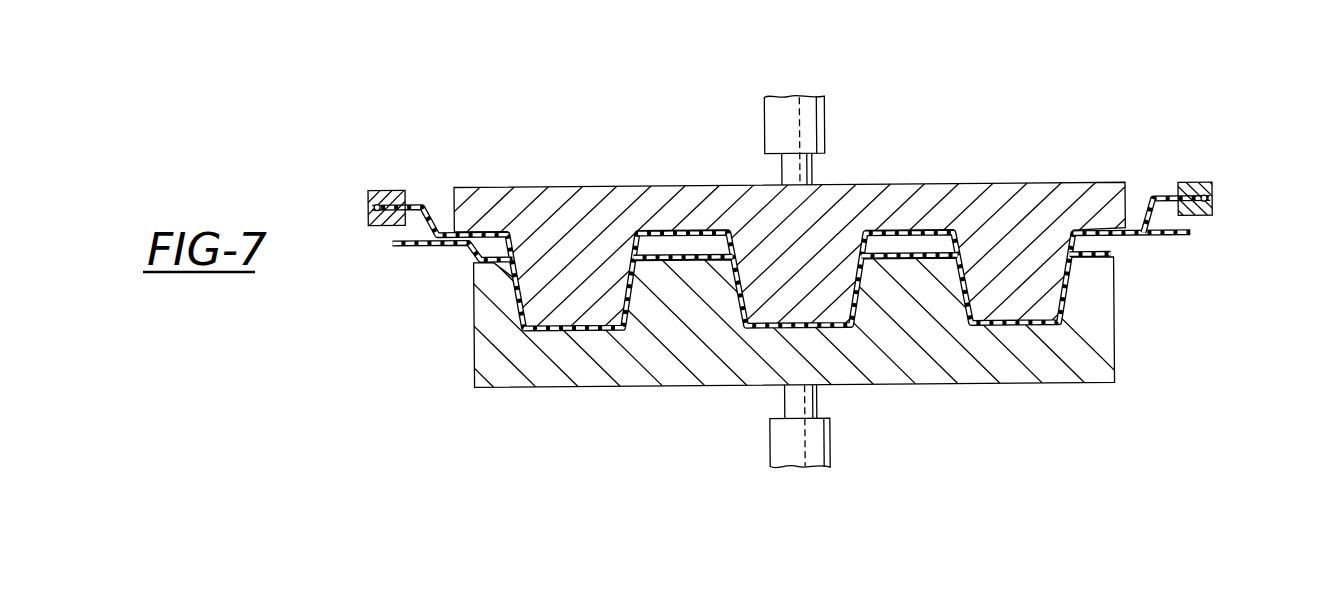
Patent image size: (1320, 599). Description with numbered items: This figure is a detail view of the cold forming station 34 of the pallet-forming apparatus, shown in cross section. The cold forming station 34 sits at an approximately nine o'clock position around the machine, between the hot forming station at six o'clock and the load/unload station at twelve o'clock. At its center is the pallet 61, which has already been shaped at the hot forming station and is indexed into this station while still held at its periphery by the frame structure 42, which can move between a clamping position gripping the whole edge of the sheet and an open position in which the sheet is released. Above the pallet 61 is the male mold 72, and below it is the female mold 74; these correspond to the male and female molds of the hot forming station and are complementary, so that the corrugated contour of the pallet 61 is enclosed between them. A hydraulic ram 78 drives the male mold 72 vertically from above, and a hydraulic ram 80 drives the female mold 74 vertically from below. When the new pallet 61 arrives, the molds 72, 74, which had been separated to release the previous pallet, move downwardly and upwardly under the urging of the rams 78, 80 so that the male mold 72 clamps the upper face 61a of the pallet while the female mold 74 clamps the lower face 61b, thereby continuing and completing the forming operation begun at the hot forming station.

The cold forming station 34 is at (1166, 143).
The frame structure 42 is at (380, 189).
The pallet 61 is at (781, 276).
The upper face of the pallet 61a is at (703, 228).
The lower face of the pallet 61b is at (633, 320).
The male mold 72 is at (567, 233).
The female mold 74 is at (487, 353).
The hydraulic ram 78 is at (812, 130).
The hydraulic ram 80 is at (822, 448).